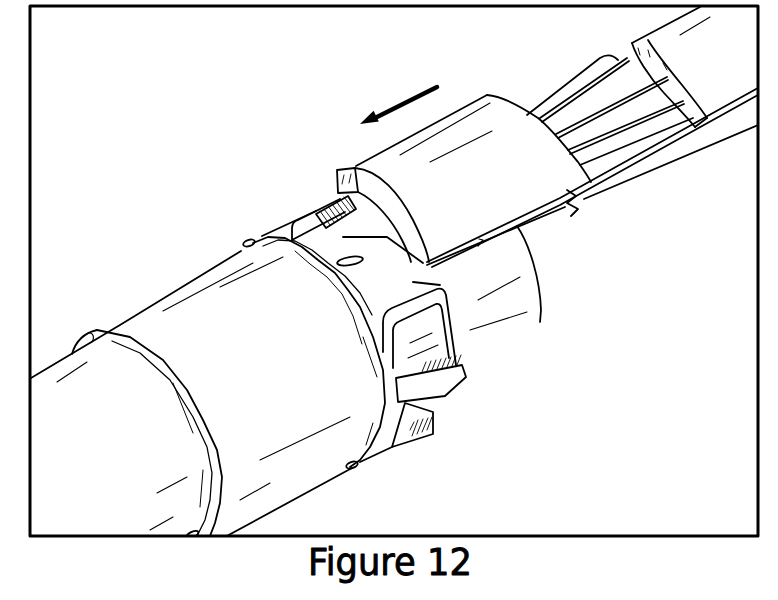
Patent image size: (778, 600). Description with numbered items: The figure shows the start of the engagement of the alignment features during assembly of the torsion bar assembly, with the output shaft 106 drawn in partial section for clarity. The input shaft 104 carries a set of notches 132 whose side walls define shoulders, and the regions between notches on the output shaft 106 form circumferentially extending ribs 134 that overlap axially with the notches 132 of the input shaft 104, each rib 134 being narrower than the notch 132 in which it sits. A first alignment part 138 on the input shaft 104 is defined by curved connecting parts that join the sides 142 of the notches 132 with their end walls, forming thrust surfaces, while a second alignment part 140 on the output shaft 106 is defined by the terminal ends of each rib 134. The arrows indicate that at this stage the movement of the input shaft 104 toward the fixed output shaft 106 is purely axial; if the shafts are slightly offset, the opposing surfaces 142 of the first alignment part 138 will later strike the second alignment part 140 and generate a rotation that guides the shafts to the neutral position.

The input shaft 104 is at (303, 486).
The output shaft 106 is at (620, 170).
The notches 132 is at (350, 232).
The ribs 134 is at (370, 213).
The first alignment part 138 is at (449, 419).
The second alignment part 140 is at (343, 106).
The opposing surfaces 142 is at (326, 217).